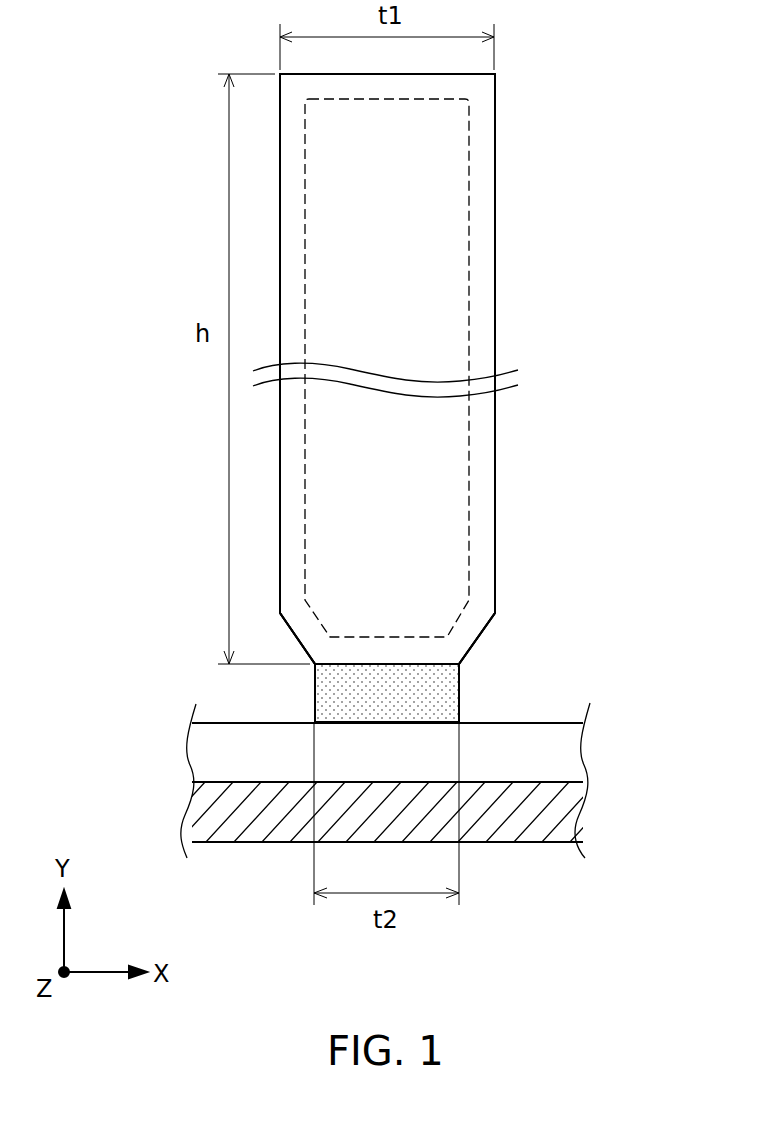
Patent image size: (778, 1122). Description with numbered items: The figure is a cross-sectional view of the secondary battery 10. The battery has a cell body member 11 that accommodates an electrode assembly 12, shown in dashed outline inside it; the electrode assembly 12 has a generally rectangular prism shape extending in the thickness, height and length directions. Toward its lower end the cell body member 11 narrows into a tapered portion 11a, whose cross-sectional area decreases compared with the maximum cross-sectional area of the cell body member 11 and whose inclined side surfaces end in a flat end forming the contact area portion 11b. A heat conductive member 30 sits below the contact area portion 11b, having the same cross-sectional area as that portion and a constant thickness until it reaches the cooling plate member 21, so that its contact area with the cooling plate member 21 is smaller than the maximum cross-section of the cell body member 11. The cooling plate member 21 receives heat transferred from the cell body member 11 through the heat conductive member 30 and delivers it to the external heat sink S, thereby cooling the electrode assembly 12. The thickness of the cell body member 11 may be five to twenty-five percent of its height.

The secondary battery 10 is at (690, 302).
The cell body member 11 is at (641, 578).
The tapered portion 11a is at (478, 638).
The contact area portion 11b is at (410, 664).
The electrode assembly 12 is at (469, 308).
The cooling plate member 21 is at (565, 752).
The heat conductive member 30 is at (330, 693).
The external heat sink S is at (580, 815).